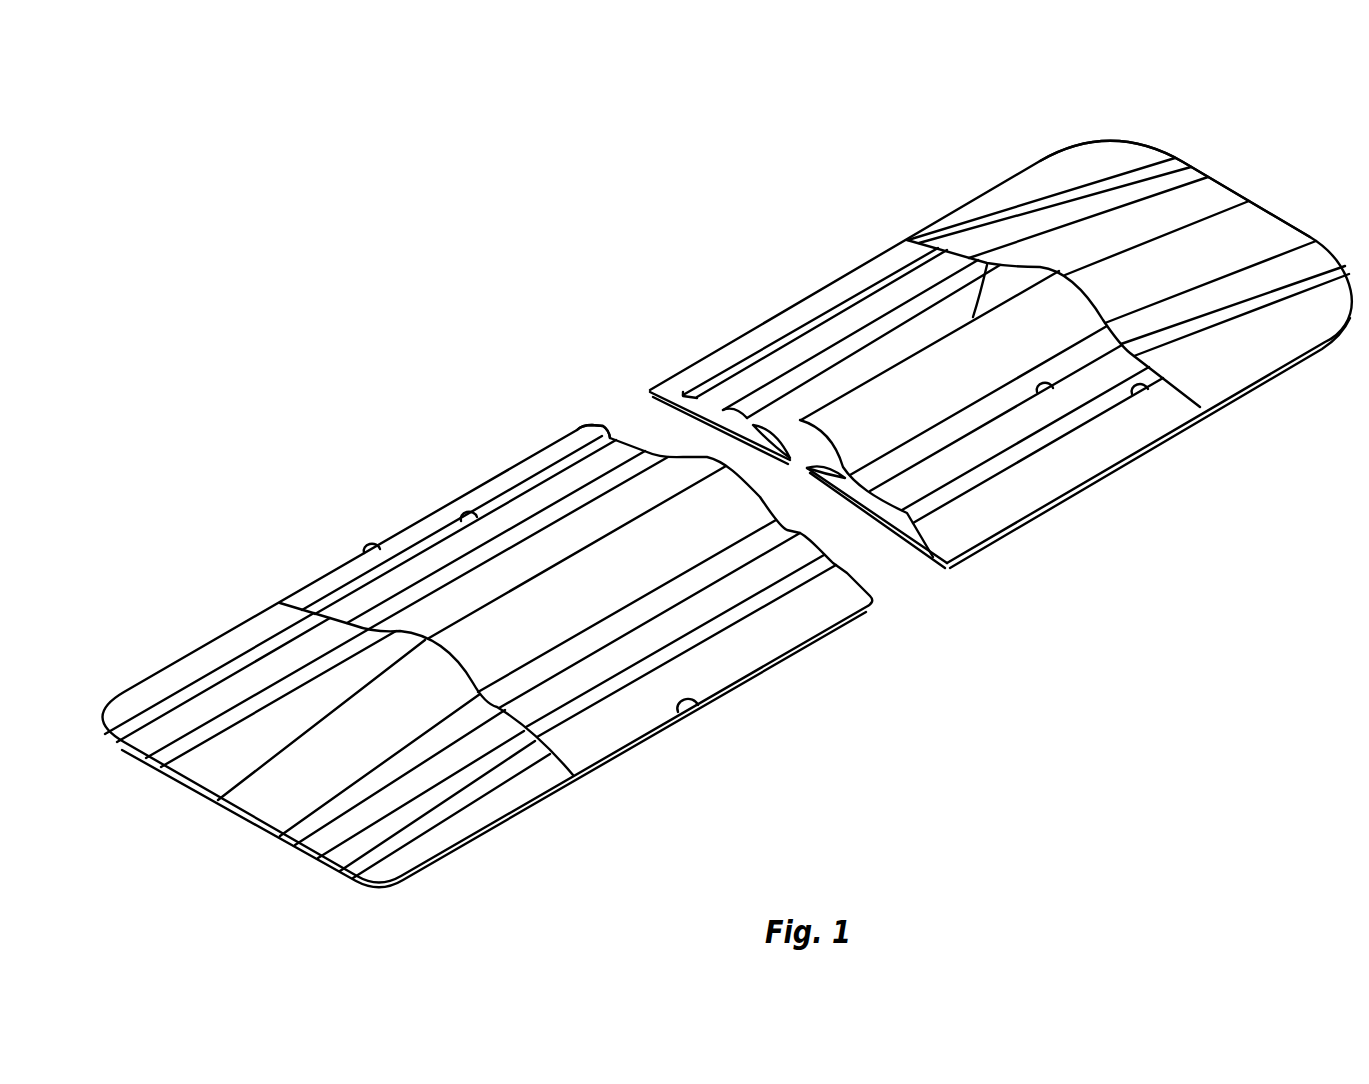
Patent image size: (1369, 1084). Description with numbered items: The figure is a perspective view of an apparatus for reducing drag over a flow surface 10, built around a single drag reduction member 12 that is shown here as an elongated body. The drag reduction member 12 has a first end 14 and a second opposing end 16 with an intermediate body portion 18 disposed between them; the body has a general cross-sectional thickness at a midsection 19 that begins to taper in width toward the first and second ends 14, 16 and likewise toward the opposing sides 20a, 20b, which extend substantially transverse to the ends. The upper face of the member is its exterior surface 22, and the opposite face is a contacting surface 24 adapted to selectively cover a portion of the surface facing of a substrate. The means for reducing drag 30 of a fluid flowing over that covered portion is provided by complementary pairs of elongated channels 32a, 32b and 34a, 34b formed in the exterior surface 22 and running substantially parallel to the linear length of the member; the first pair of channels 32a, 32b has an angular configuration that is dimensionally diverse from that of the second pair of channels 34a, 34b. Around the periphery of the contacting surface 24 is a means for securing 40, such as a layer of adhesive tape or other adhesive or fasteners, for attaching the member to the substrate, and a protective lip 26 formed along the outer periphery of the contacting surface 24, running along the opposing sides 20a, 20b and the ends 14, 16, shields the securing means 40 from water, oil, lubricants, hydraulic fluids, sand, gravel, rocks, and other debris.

The apparatus for reducing drag over a flow surface 10 is at (727, 512).
The drag reduction member 12 is at (1001, 390).
The first end 14 is at (1248, 193).
The second opposing end 16 is at (488, 639).
The intermediate body portion 18 is at (760, 375).
The midsection 19 is at (973, 317).
The opposing side 20a is at (690, 702).
The opposing side 20b is at (372, 548).
The exterior surface 22 is at (638, 560).
The contacting surface 24 is at (933, 563).
The protective lip 26 is at (507, 832).
The means for reducing drag 30 is at (1003, 477).
The first elongated channel 32a is at (1140, 391).
The first elongated channel 32b is at (470, 516).
The second elongated channel 34a is at (1045, 388).
The second elongated channel 34b is at (586, 486).
The means for securing 40 is at (903, 535).